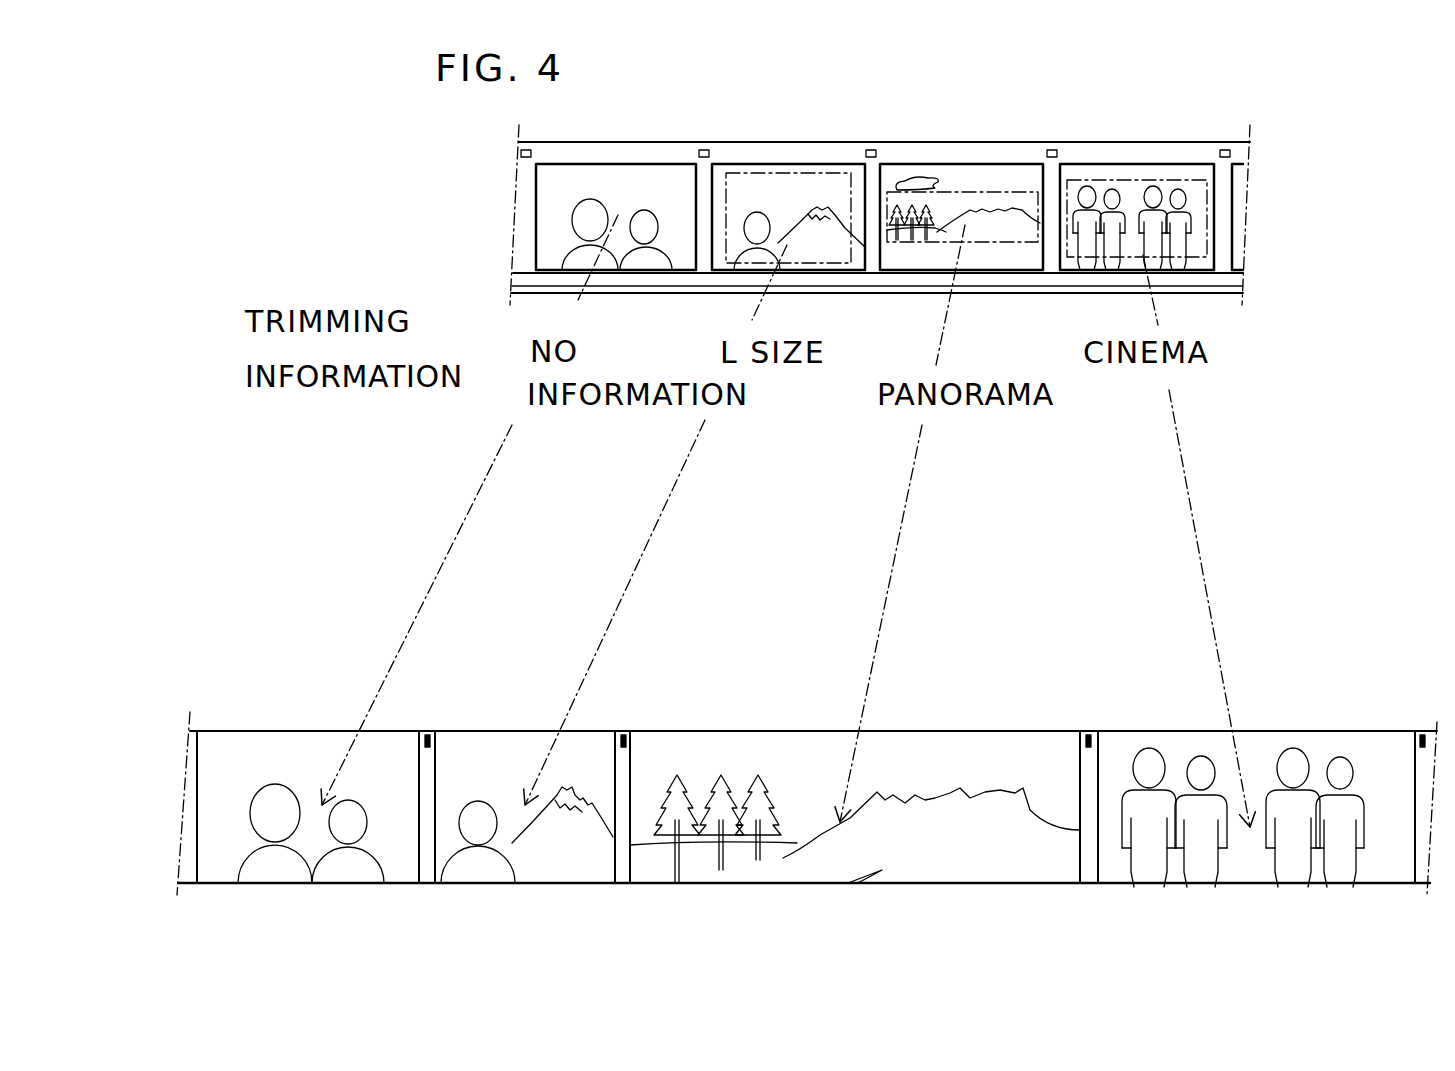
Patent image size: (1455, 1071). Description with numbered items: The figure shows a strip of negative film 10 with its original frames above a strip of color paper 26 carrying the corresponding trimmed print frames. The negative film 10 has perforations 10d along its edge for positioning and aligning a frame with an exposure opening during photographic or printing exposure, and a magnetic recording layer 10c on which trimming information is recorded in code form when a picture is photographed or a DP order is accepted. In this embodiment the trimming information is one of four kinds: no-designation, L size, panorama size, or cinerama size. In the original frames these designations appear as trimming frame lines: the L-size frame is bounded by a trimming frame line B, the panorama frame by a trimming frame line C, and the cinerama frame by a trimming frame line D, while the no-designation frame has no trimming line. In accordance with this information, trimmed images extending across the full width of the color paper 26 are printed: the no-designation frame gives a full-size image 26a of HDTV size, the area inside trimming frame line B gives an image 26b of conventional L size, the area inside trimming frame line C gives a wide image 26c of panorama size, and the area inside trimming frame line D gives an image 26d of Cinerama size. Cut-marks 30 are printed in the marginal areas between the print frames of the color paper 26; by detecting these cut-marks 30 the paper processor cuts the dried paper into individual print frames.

The negative film 10 is at (989, 130).
The magnetic recording layer 10c is at (1237, 280).
The perforations 10d is at (704, 150).
The trimming frame line B is at (785, 172).
The trimming frame line C is at (957, 190).
The trimming frame line D is at (1127, 178).
The color paper 26 is at (726, 715).
The image 26a is at (258, 755).
The image 26b is at (528, 748).
The image 26c is at (805, 758).
The image 26d is at (1328, 748).
The cut-marks 30 is at (428, 735).